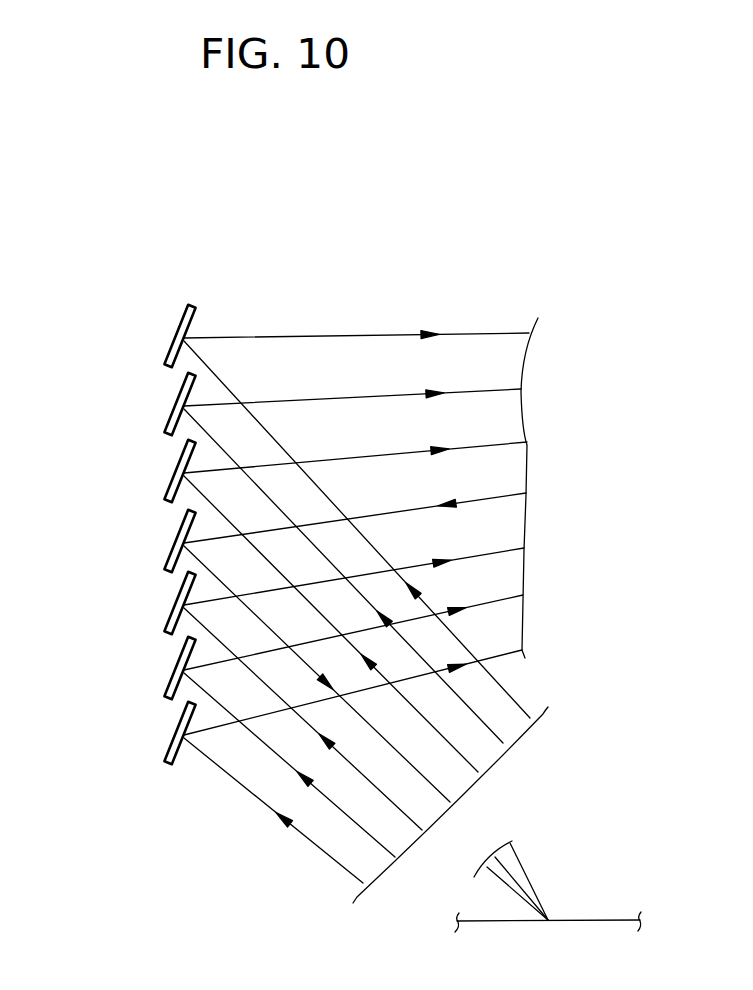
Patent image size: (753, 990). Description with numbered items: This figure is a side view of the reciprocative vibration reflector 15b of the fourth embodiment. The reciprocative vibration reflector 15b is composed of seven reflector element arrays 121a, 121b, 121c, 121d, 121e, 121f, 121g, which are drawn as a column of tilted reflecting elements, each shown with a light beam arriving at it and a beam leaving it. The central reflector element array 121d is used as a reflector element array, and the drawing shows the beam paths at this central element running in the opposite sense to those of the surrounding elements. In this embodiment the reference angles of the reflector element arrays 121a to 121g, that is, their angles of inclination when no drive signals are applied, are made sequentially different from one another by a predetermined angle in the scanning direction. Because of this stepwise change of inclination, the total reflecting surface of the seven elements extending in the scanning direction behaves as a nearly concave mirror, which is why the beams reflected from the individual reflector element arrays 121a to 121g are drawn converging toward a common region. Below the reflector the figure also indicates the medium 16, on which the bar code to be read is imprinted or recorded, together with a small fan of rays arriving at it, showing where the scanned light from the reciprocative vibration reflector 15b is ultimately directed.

The reflector element array 121a is at (176, 339).
The reflector element array 121b is at (176, 407).
The reflector element array 121c is at (176, 474).
The central reflector element array 121d is at (176, 544).
The reflector element array 121e is at (176, 606).
The reflector element array 121f is at (176, 671).
The reflector element array 121g is at (176, 736).
The reciprocative vibration reflector 15b is at (404, 299).
The medium 16 is at (521, 924).